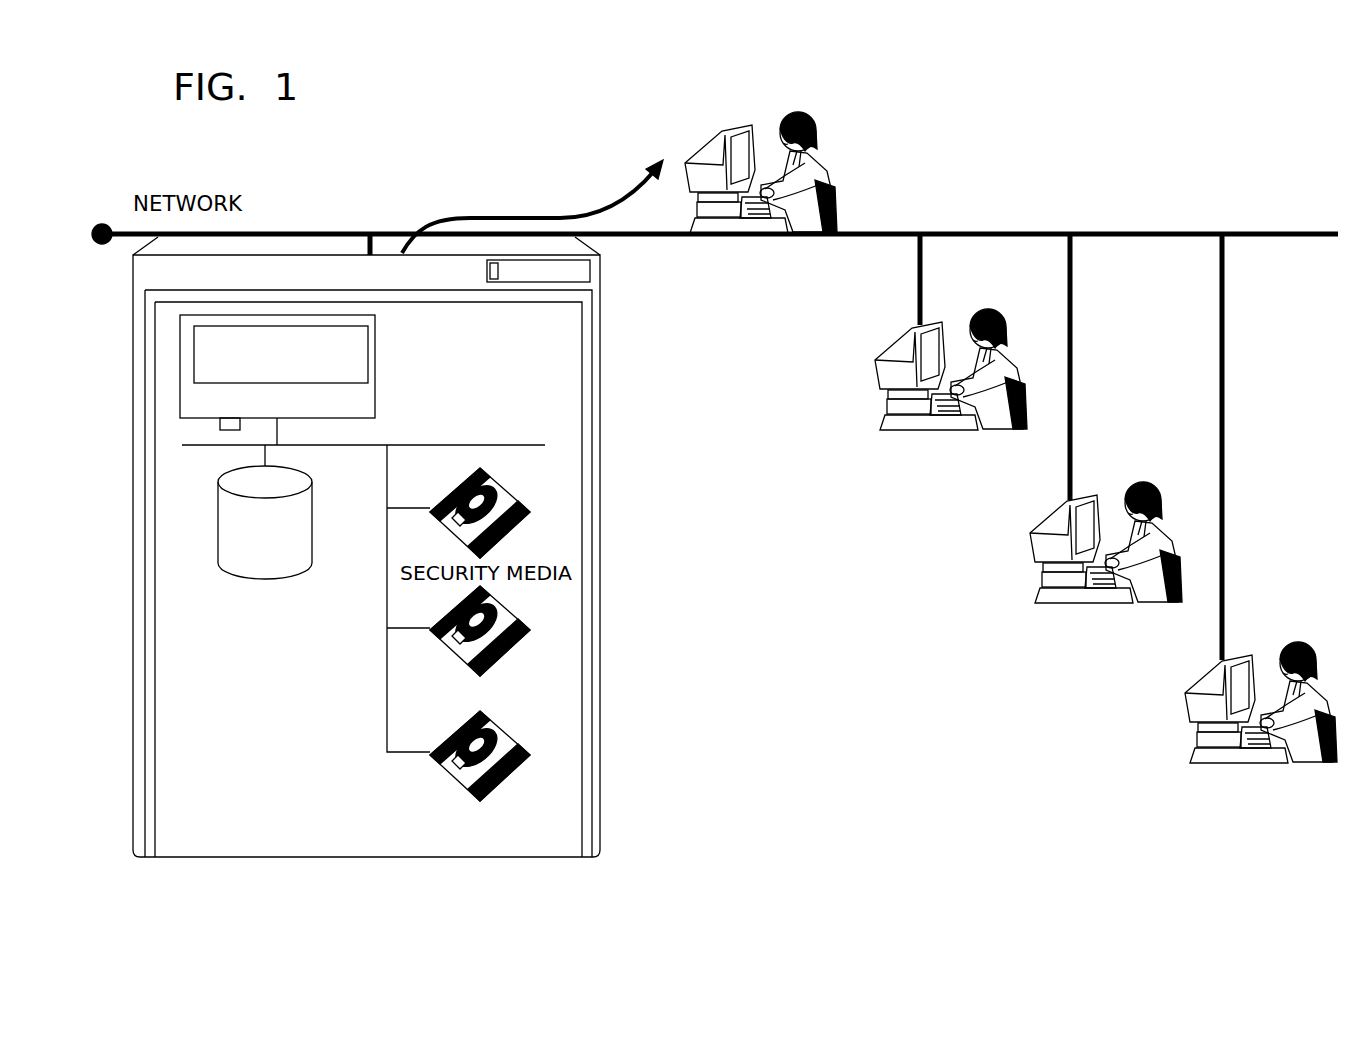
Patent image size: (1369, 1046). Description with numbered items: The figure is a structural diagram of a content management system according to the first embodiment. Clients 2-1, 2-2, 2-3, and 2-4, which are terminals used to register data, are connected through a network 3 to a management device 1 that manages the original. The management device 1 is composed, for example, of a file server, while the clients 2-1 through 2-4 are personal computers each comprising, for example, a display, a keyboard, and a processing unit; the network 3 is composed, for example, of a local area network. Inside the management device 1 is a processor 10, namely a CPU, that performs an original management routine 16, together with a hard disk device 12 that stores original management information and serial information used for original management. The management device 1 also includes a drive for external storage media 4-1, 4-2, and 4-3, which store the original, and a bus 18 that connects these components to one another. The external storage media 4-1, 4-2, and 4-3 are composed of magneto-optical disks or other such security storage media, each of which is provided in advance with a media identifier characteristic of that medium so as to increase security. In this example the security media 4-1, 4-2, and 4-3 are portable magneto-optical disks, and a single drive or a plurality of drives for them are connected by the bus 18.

The management device 1 is at (560, 820).
The client 2-1 is at (845, 173).
The client 2-2 is at (865, 388).
The client 2-3 is at (1015, 548).
The client 2-4 is at (1175, 713).
The network 3 is at (1137, 225).
The external storage medium 4-1 is at (543, 510).
The external storage medium 4-2 is at (537, 625).
The external storage medium 4-3 is at (535, 735).
The processor 10 is at (198, 410).
The hard disk device 12 is at (268, 567).
The original management routine 16 is at (343, 340).
The bus 18 is at (348, 445).